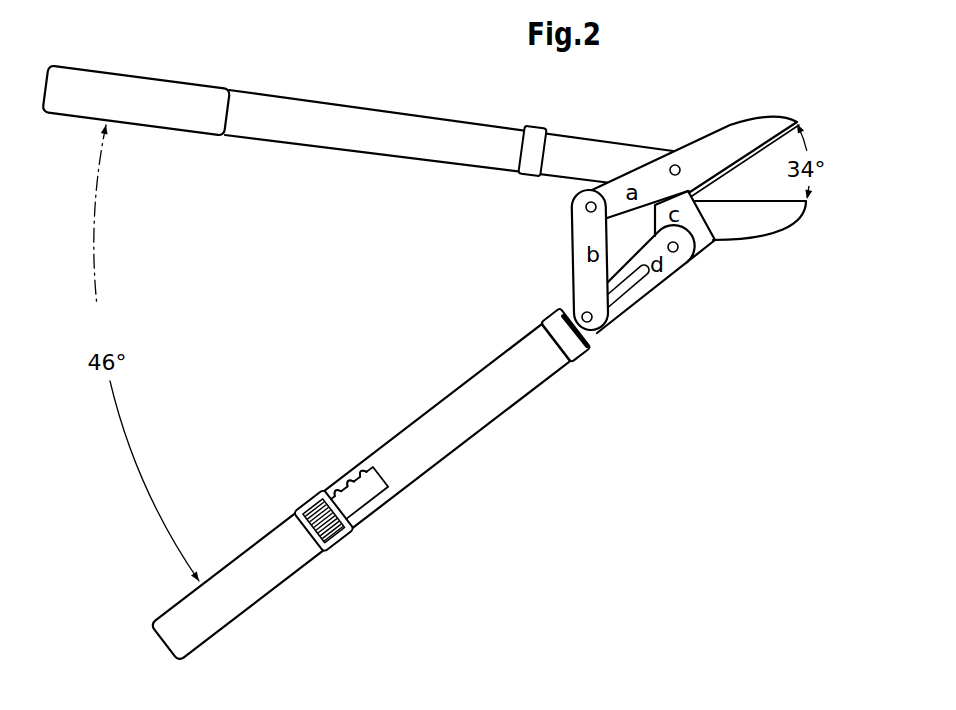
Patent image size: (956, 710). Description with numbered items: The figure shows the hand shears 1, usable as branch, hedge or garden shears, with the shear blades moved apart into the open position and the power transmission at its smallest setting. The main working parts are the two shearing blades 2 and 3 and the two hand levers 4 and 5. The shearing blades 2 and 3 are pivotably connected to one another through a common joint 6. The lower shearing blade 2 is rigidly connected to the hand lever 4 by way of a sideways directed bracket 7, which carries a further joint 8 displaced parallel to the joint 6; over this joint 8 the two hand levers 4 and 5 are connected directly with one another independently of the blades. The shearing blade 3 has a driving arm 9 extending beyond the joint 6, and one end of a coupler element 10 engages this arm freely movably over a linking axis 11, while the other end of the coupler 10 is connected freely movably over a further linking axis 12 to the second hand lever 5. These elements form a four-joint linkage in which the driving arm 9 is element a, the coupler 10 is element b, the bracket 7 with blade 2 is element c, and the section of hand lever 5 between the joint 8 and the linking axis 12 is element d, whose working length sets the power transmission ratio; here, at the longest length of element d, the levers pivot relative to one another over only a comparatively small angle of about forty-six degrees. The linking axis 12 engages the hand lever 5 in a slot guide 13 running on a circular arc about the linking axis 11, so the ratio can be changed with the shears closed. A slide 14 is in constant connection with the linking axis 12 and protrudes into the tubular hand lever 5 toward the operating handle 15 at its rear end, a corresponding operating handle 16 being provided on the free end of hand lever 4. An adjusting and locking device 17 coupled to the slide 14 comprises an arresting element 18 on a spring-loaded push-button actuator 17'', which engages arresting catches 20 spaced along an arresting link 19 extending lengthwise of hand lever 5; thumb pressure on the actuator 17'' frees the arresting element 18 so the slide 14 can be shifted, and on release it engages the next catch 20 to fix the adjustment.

The hand shears 1 is at (697, 117).
The shearing blade 2 is at (757, 220).
The shearing blade 3 is at (737, 138).
The hand lever 4 is at (447, 127).
The hand lever 5 is at (450, 396).
The joint 6 is at (675, 162).
The bracket 7 is at (688, 218).
The joint 8 is at (677, 253).
The driving arm 9 is at (643, 177).
The coupler element 10 is at (577, 273).
The linking axis 11 is at (584, 207).
The linking axis 12 is at (600, 330).
The slot guide 13 is at (633, 288).
The slide 14 is at (588, 352).
The operating handle 15 is at (255, 551).
The operating handle 16 is at (160, 90).
The adjusting and locking device 17 is at (323, 552).
The push-button actuator 17'' is at (308, 461).
The arresting element 18 is at (352, 537).
The arresting link 19 is at (368, 475).
The arresting catches 20 is at (376, 502).